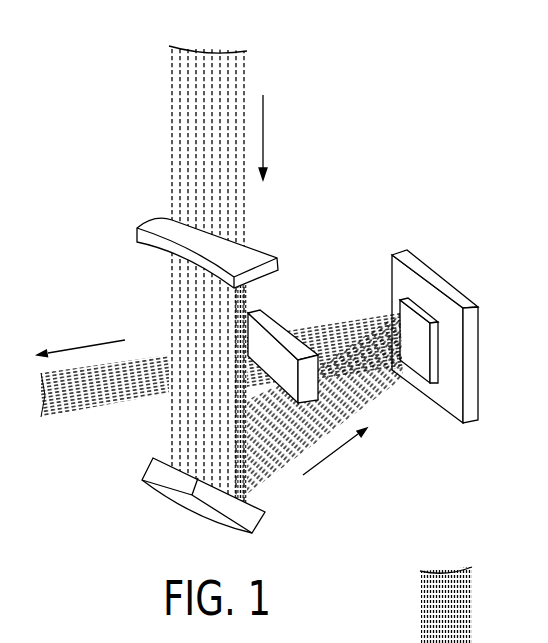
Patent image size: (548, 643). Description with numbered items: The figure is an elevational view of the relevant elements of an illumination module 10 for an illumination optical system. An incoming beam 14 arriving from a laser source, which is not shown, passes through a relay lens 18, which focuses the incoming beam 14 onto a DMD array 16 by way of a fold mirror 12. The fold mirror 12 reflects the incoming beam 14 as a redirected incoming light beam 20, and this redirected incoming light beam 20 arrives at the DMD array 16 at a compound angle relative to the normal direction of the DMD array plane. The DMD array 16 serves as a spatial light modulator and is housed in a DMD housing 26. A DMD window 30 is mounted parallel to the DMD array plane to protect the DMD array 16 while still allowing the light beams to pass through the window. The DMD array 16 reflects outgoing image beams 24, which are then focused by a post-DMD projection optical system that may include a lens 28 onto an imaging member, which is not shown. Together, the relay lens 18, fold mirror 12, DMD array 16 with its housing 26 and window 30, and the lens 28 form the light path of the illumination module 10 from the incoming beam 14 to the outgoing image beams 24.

The illumination module 10 is at (392, 104).
The fold mirror 12 is at (256, 517).
The incoming beam 14 is at (188, 140).
The DMD array 16 is at (465, 336).
The relay lens 18 is at (145, 223).
The redirected incoming light beam 20 is at (372, 393).
The outgoing image beams 24 is at (340, 328).
The DMD housing 26 is at (478, 320).
The lens 28 is at (272, 332).
The DMD window 30 is at (427, 372).